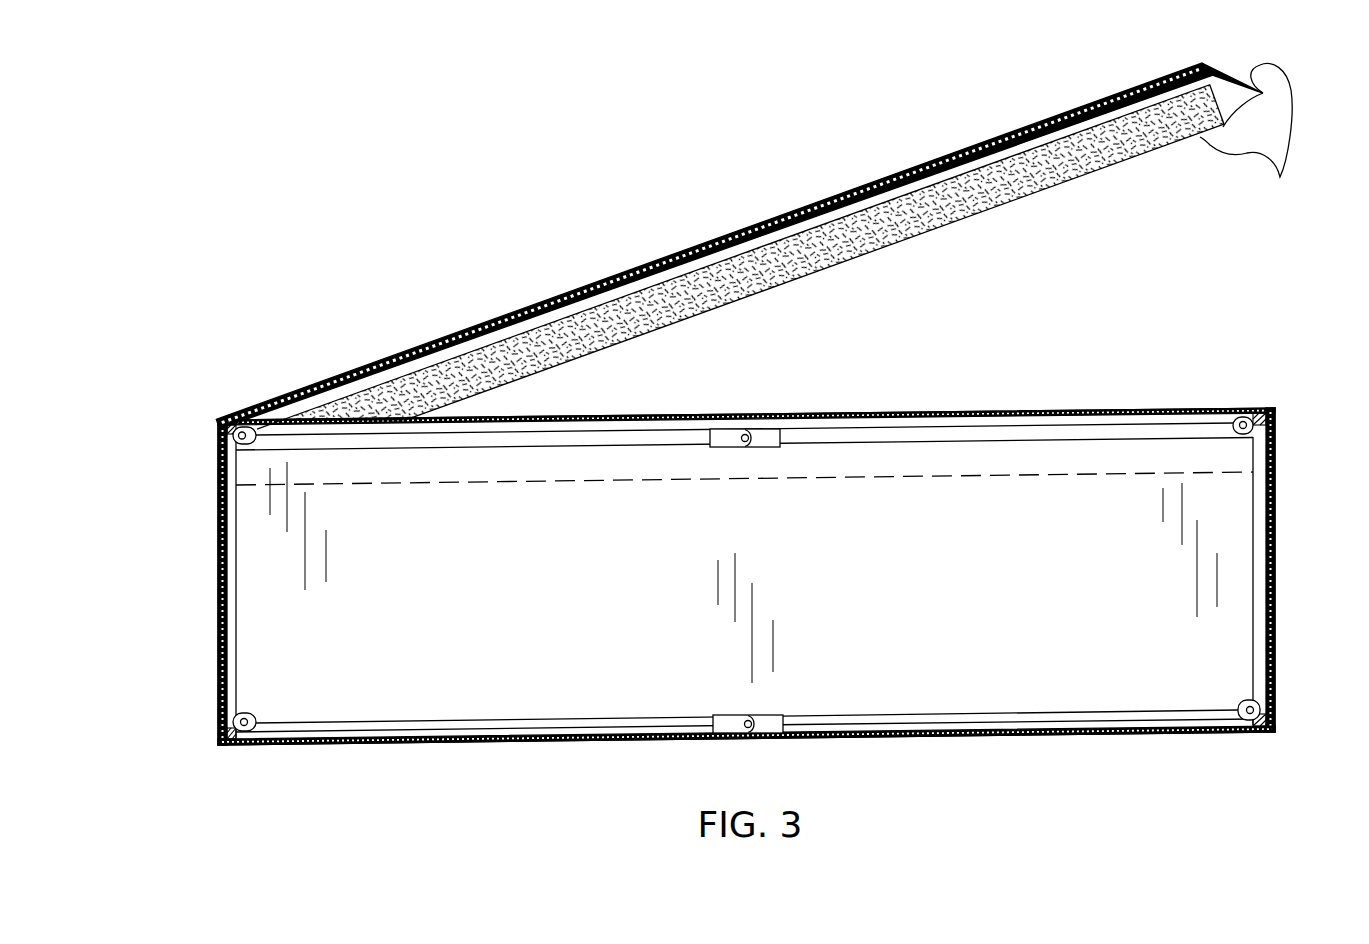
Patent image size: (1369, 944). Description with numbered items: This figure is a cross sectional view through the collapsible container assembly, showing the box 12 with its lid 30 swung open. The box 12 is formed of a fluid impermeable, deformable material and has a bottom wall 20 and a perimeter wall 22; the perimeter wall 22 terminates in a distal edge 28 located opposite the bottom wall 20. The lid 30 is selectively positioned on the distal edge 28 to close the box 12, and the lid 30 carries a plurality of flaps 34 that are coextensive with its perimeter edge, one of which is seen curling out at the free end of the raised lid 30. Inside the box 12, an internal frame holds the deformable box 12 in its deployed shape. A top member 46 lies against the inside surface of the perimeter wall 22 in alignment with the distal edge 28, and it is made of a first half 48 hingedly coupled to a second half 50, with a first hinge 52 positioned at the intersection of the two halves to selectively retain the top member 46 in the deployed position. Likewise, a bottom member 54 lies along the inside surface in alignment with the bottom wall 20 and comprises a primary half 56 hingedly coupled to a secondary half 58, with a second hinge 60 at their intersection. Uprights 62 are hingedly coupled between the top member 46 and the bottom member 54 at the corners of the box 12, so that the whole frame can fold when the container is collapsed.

The box 12 is at (1270, 412).
The bottom wall 20 is at (553, 743).
The perimeter wall 22 is at (1270, 612).
The distal edge 28 is at (1200, 412).
The lid 30 is at (673, 257).
The flaps 34 is at (1248, 138).
The top members 46 is at (993, 427).
The first half 48 is at (639, 428).
The second half 50 is at (865, 427).
The first hinges 52 is at (772, 430).
The bottom members 54 is at (1022, 715).
The primary half 56 is at (625, 723).
The secondary half 58 is at (918, 720).
The second hinges 60 is at (767, 712).
The uprights 62 is at (262, 608).